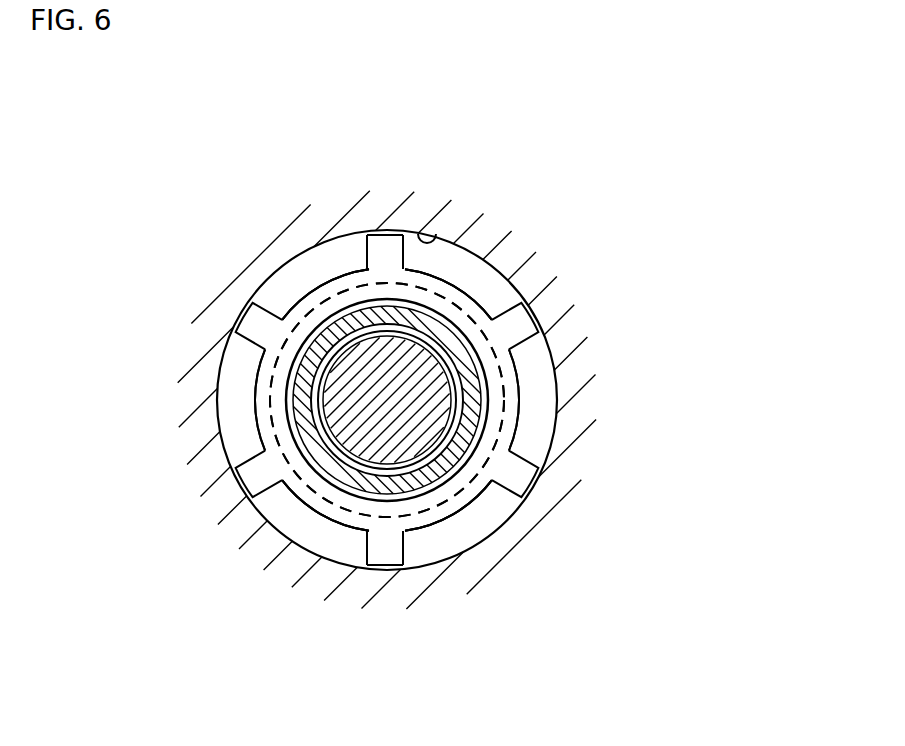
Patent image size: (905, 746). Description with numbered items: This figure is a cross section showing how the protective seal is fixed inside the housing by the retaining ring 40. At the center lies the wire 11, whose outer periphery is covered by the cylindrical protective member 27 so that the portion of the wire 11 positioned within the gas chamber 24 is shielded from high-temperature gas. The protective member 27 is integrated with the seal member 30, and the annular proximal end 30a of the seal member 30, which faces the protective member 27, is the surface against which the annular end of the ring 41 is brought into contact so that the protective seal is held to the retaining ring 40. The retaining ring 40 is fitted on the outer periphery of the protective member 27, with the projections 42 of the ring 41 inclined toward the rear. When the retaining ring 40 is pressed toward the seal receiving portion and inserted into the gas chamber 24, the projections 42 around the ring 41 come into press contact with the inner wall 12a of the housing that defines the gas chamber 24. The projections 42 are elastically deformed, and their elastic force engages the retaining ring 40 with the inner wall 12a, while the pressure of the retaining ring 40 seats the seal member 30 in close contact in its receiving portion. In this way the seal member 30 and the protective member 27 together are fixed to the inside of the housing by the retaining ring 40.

The wire 11 is at (425, 414).
The inner wall 12a is at (415, 231).
The gas chamber 24 is at (235, 381).
The protective member 27 is at (300, 412).
The seal member 30 is at (462, 298).
The annular proximal end 30a is at (499, 370).
The retaining ring 40 is at (468, 515).
The ring 41 is at (300, 296).
The projections 42 is at (383, 247).